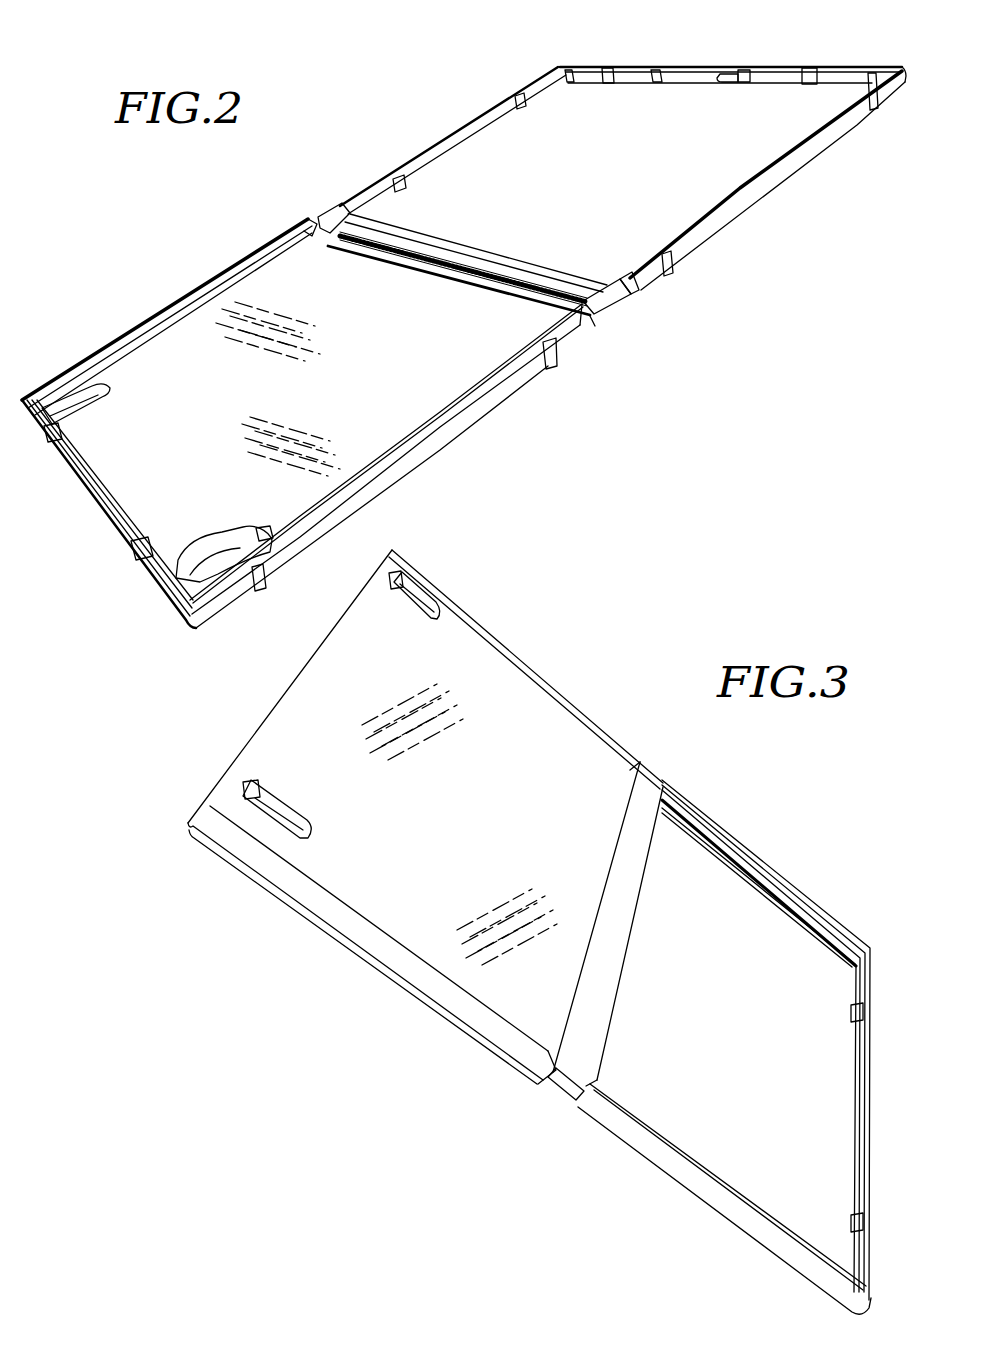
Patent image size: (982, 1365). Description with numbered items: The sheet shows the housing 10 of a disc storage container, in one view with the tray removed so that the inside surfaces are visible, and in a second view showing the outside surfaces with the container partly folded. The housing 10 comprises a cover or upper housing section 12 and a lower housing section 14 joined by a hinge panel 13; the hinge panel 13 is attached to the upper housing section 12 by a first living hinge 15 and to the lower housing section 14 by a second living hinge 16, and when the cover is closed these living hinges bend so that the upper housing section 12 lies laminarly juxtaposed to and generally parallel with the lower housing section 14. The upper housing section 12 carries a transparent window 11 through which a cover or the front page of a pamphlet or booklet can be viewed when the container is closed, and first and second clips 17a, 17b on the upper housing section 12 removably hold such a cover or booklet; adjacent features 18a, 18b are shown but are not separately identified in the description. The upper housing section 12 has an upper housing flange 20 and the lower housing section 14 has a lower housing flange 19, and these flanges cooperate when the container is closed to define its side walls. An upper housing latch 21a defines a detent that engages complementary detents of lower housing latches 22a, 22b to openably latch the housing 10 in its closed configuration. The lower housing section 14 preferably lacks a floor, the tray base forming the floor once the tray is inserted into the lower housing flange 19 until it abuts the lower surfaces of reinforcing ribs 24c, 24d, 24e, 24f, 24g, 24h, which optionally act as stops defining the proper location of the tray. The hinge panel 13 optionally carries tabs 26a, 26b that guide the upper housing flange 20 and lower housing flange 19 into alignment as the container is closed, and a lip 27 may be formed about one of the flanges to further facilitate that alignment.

In FIG. 2, the housing 10 is at (663, 375).
In FIG. 3, the housing 10 is at (598, 686).
In FIG. 2, the transparent window 11 is at (328, 400).
In FIG. 3, the transparent window 11 is at (470, 810).
In FIG. 2, the upper housing section 12 is at (237, 265).
In FIG. 3, the upper housing section 12 is at (320, 927).
In FIG. 2, the hinge panel 13 is at (517, 290).
In FIG. 3, the hinge panel 13 is at (620, 872).
In FIG. 2, the lower housing section 14 is at (445, 140).
In FIG. 3, the lower housing section 14 is at (817, 908).
In FIG. 2, the first living hinge 15 is at (382, 262).
In FIG. 3, the first living hinge 15 is at (585, 980).
In FIG. 2, the second living hinge 16 is at (527, 263).
In FIG. 3, the second living hinge 16 is at (625, 968).
In FIG. 2, the first clip 17a is at (156, 580).
In FIG. 3, the first clip 17a is at (284, 812).
In FIG. 2, the second clip 17b is at (95, 396).
In FIG. 3, the second clip 17b is at (410, 602).
In FIG. 2, the latch receiver 18a is at (268, 527).
In FIG. 3, the latch receiver 18a is at (258, 785).
In FIG. 2, the latch receiver 18b is at (68, 432).
In FIG. 3, the latch receiver 18b is at (410, 583).
In FIG. 2, the lower housing flange 19 is at (762, 192).
In FIG. 3, the lower housing flange 19 is at (720, 1200).
In FIG. 2, the upper housing flange 20 is at (437, 437).
In FIG. 3, the upper housing flange 20 is at (395, 952).
In FIG. 2, the upper housing latch 21a is at (150, 540).
In FIG. 2, the lower housing latch 22a is at (800, 70).
In FIG. 2, the lower housing latch 22b is at (603, 68).
In FIG. 2, the reinforcing rib 24c is at (873, 80).
In FIG. 2, the reinforcing rib 24d is at (722, 70).
In FIG. 2, the reinforcing rib 24e is at (652, 82).
In FIG. 2, the reinforcing rib 24f is at (573, 80).
In FIG. 2, the reinforcing rib 24g is at (533, 108).
In FIG. 2, the reinforcing rib 24h is at (413, 182).
In FIG. 2, the tab 26a is at (632, 304).
In FIG. 3, the tab 26a is at (565, 1094).
In FIG. 2, the tab 26b is at (328, 216).
In FIG. 2, the lip 27 is at (442, 400).